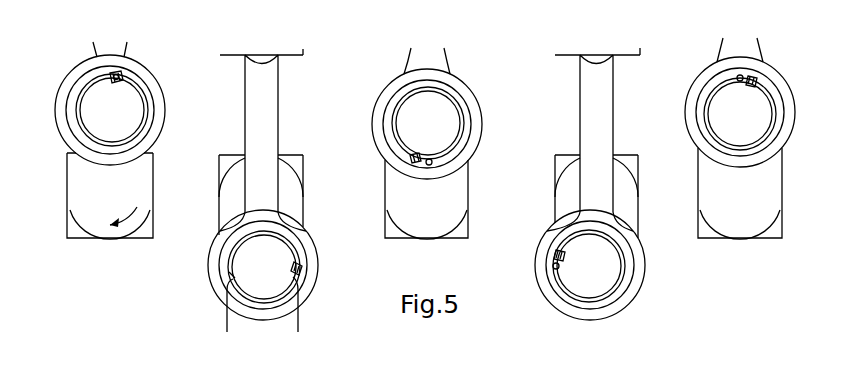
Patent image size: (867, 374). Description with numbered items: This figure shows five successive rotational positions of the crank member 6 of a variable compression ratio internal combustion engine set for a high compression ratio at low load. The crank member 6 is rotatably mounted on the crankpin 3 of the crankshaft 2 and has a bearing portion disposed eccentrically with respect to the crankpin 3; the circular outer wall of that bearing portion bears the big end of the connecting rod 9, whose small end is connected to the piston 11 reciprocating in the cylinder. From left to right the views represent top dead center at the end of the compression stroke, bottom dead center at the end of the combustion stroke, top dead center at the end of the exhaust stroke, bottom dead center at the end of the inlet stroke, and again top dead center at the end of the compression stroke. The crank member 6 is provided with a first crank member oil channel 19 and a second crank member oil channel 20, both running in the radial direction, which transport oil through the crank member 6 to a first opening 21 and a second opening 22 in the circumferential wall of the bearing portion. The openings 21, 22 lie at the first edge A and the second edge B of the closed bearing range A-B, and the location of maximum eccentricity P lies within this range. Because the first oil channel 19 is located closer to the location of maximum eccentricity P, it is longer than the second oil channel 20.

The crankshaft 2 is at (140, 190).
The crankpin 3 is at (95, 110).
The crank member 6 is at (75, 122).
The connecting rod 9 is at (115, 44).
The piston 11 is at (279, 53).
The first crank member oil channel 19 is at (122, 83).
The second crank member oil channel 20 is at (125, 155).
The first opening 21 is at (297, 287).
The second opening 22 is at (233, 283).
The location of maximum eccentricity P is at (110, 83).
The first edge A is at (297, 317).
The second edge B is at (229, 320).